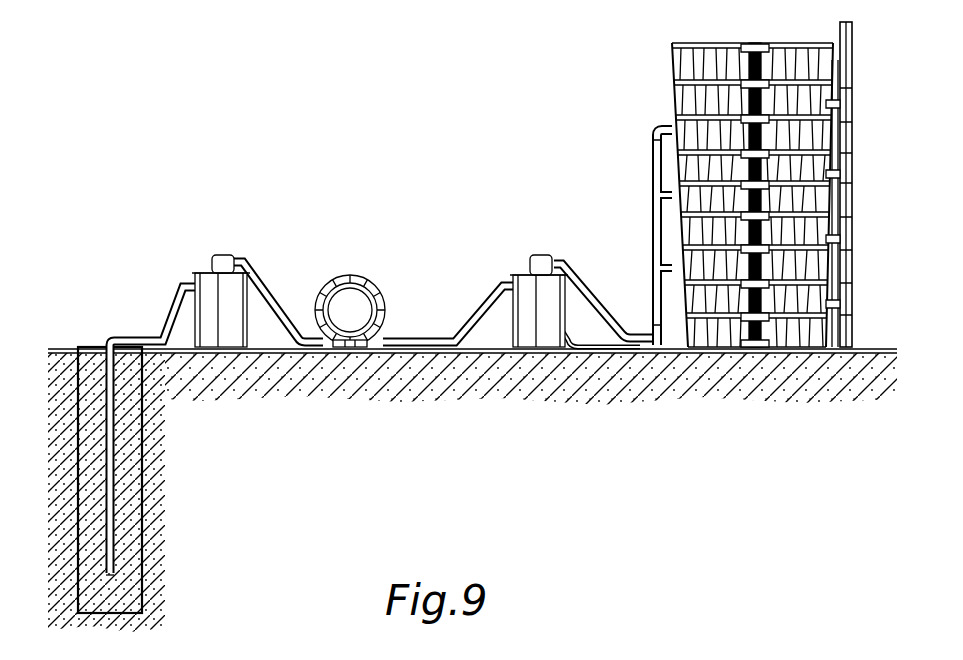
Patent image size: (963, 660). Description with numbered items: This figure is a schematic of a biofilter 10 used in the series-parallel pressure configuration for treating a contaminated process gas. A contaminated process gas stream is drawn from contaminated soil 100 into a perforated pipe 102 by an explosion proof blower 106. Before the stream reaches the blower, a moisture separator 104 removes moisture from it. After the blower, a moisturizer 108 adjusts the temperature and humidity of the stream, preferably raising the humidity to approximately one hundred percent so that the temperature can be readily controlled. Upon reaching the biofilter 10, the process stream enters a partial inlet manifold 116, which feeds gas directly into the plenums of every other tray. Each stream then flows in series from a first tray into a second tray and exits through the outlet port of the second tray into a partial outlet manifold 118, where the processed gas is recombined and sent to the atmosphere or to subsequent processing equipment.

The biofilter 10 is at (810, 234).
The contaminated soil 100 is at (140, 513).
The perforated pipe 102 is at (120, 444).
The moisture separator 104 is at (198, 272).
The explosion proof blower 106 is at (367, 276).
The moisturizer 108 is at (514, 272).
The partial inlet manifold 116 is at (652, 178).
The partial outlet manifold 118 is at (852, 140).